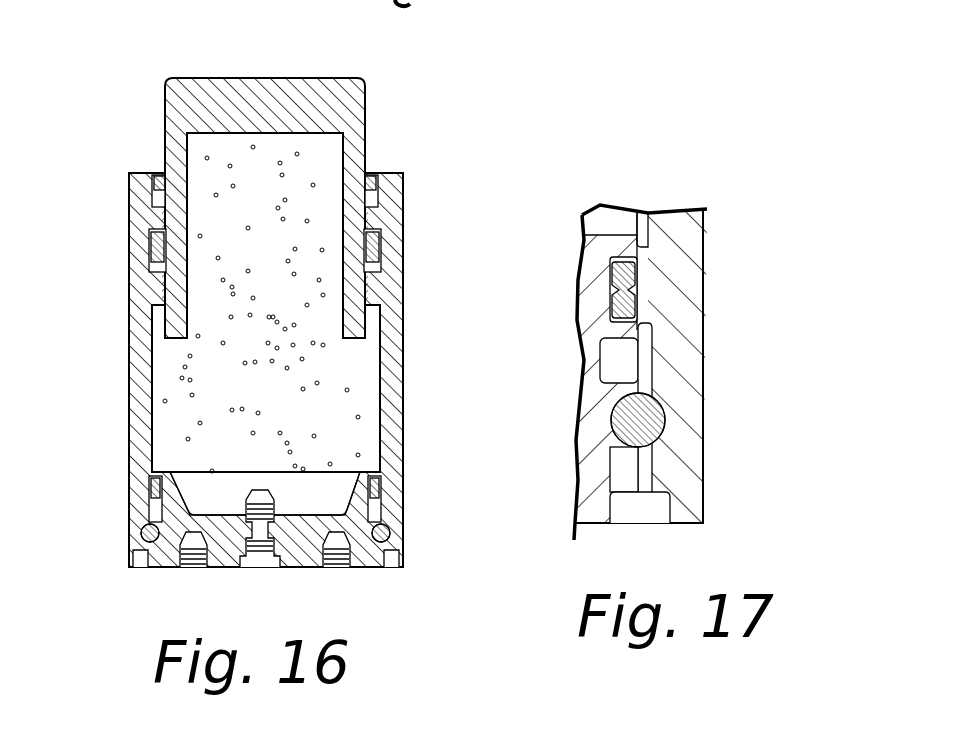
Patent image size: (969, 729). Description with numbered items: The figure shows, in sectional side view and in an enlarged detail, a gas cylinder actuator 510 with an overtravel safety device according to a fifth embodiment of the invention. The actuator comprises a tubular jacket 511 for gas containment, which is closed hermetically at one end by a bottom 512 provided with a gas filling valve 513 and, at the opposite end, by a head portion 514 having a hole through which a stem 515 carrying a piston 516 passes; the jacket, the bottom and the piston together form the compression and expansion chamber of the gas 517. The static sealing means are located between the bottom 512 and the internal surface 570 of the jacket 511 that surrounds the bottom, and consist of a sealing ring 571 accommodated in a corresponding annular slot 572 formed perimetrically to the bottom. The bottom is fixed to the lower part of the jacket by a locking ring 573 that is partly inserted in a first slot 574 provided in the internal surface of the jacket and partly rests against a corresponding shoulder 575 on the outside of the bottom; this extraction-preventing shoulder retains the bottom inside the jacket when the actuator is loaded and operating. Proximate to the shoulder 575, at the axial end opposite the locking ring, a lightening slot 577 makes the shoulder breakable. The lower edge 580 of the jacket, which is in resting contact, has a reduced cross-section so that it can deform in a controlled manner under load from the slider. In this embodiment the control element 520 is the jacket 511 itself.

In FIG. 16, the gas cylinder actuator 510 is at (412, 125).
In FIG. 16, the tubular jacket 511 is at (393, 373).
In FIG. 17, the tubular jacket 511 is at (660, 268).
In FIG. 16, the bottom 512 is at (305, 575).
In FIG. 17, the bottom 512 is at (565, 461).
In FIG. 16, the gas filling valve 513 is at (262, 556).
In FIG. 16, the head portion 514 is at (125, 172).
In FIG. 16, the stem 515 is at (240, 82).
In FIG. 16, the piston 516 is at (380, 318).
In FIG. 16, the gas 517 is at (215, 415).
In FIG. 16, the control element 520 is at (126, 390).
In FIG. 17, the control element 520 is at (675, 360).
In FIG. 16, the internal surface 570 is at (378, 410).
In FIG. 17, the internal surface 570 is at (645, 213).
In FIG. 17, the sealing ring 571 is at (637, 282).
In FIG. 17, the annular slot 572 is at (625, 256).
In FIG. 17, the locking ring 573 is at (647, 420).
In FIG. 17, the first slot 574 is at (650, 467).
In FIG. 17, the shoulder 575 is at (620, 392).
In FIG. 17, the lightening slot 577 is at (612, 352).
In FIG. 16, the lower edge 580 is at (135, 562).
In FIG. 17, the lower edge 580 is at (682, 513).